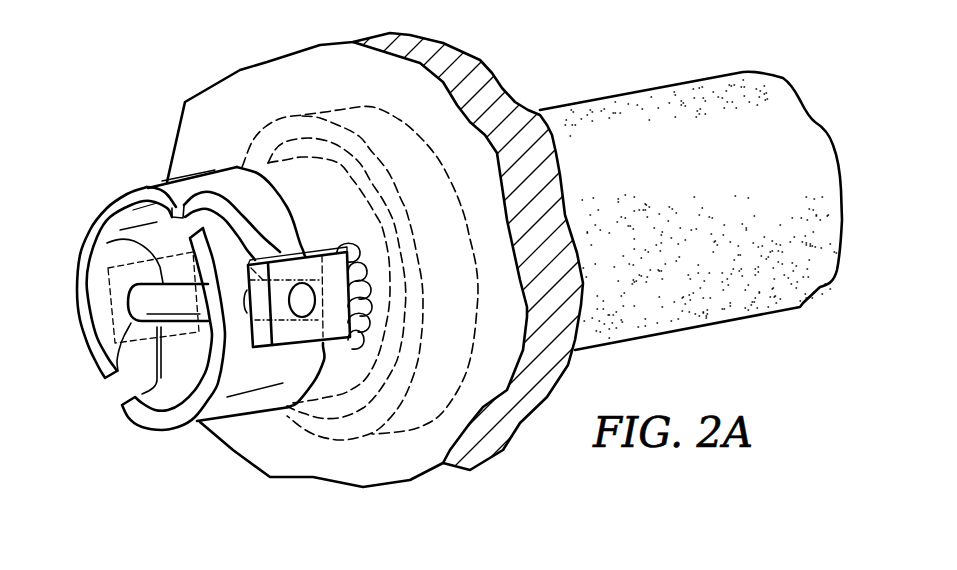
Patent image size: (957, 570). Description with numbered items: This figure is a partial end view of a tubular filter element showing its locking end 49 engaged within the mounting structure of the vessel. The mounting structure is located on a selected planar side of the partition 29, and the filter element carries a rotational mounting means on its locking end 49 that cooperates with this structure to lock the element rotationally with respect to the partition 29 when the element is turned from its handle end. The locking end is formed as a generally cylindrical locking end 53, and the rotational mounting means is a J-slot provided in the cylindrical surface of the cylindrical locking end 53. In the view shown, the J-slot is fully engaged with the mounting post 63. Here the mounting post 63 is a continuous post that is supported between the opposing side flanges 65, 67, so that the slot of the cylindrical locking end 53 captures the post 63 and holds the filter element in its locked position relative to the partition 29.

The locking end 49 is at (160, 115).
The partition 29 is at (657, 87).
The cylindrical locking end 53 is at (148, 186).
The mounting post 63 is at (86, 243).
The side flange 65 is at (110, 297).
The side flange 67 is at (288, 256).